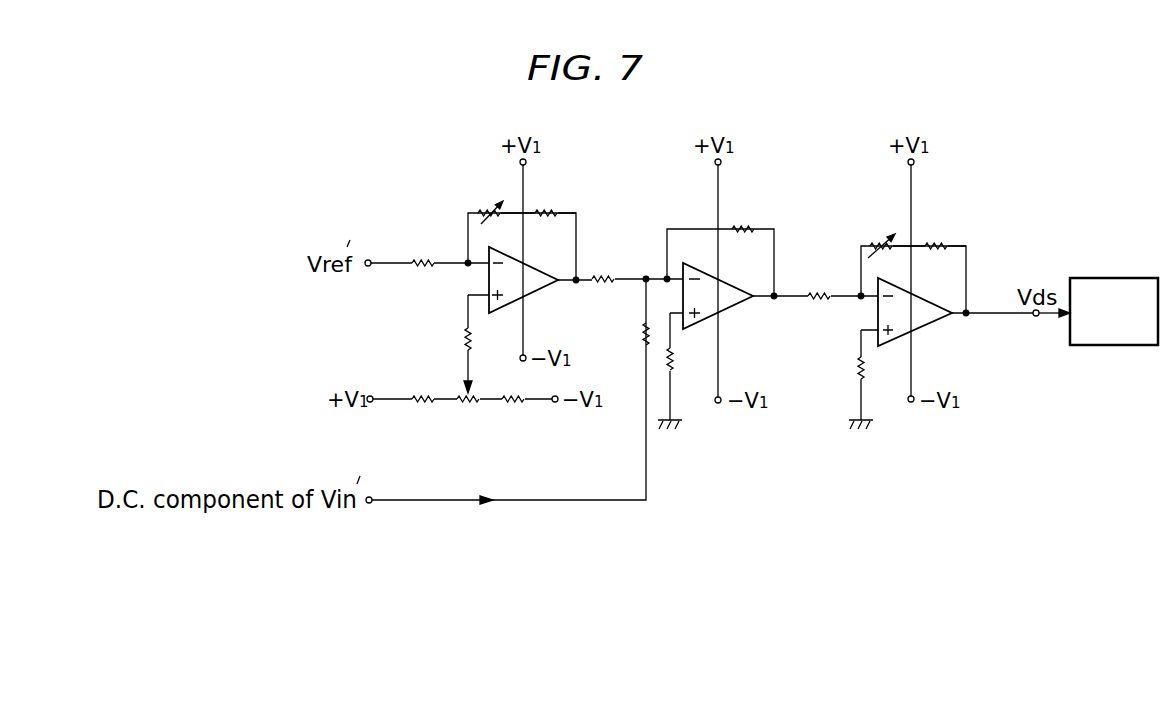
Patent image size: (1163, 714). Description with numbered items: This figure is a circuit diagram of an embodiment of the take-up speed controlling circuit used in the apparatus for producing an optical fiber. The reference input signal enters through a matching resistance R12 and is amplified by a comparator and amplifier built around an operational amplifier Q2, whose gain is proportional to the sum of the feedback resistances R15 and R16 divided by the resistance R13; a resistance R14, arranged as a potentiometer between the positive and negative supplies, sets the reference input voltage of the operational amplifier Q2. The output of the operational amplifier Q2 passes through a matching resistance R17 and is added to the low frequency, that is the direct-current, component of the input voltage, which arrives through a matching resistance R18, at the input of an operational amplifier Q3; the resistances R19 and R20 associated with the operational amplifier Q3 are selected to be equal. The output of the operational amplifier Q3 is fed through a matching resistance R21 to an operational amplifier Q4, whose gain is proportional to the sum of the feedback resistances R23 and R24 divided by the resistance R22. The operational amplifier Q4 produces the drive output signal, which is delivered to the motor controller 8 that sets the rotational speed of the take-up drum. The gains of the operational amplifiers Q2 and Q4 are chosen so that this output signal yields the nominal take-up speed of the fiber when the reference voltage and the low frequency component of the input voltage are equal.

The matching resistance R12 is at (423, 257).
The gain-setting resistance R13 is at (446, 340).
The reference input voltage setting resistance R14 is at (525, 412).
The feedback resistance R15 is at (488, 208).
The feedback resistance R16 is at (553, 208).
The matching resistance R17 is at (605, 274).
The matching resistance R18 is at (642, 337).
The input resistance R19 is at (667, 367).
The feedback resistance R20 is at (743, 225).
The matching resistance R21 is at (822, 287).
The gain-setting resistance R22 is at (855, 367).
The feedback resistance R23 is at (877, 237).
The feedback resistance R24 is at (936, 238).
The operational amplifier Q2 is at (535, 295).
The operational amplifier Q3 is at (732, 307).
The operational amplifier Q4 is at (921, 317).
The motor controller 8 is at (1123, 338).